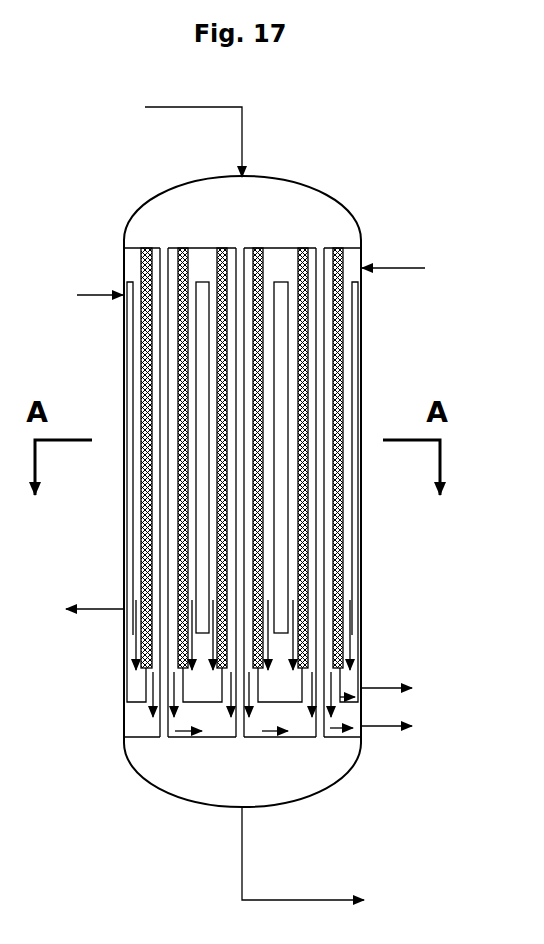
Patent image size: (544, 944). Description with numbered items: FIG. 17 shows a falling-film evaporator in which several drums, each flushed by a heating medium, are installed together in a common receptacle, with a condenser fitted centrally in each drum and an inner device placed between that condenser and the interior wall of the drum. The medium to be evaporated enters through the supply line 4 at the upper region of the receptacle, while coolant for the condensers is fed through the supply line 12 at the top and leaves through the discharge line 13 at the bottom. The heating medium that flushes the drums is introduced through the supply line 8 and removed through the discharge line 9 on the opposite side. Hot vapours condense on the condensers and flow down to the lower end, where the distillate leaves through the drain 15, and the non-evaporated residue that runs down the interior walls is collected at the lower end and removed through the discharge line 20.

The supply line for the coolant 12 is at (197, 105).
The supply line for a heating medium 8 is at (90, 293).
The supply line for the medium to be evaporated 4 is at (407, 267).
The discharge line for the heating medium 9 is at (92, 613).
The discharge line 20 is at (382, 683).
The drain for the distillate 15 is at (382, 727).
The discharge line for the coolant 13 is at (322, 895).